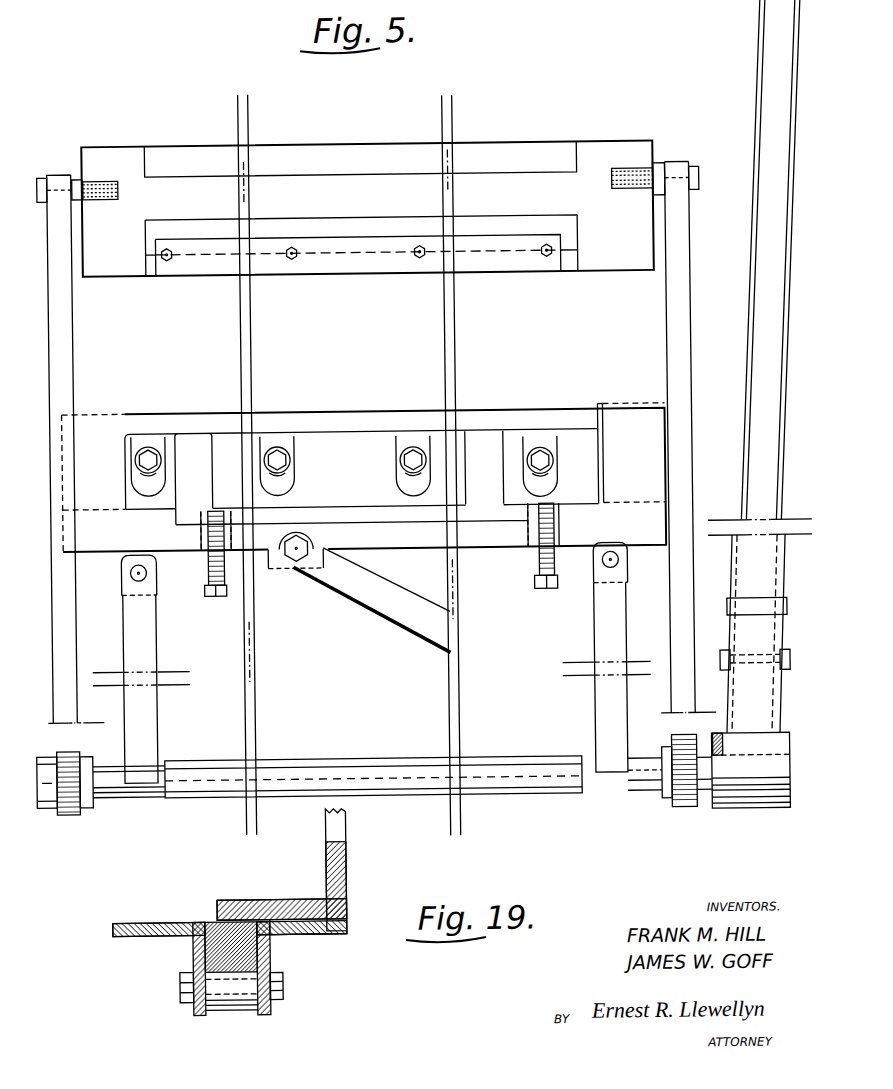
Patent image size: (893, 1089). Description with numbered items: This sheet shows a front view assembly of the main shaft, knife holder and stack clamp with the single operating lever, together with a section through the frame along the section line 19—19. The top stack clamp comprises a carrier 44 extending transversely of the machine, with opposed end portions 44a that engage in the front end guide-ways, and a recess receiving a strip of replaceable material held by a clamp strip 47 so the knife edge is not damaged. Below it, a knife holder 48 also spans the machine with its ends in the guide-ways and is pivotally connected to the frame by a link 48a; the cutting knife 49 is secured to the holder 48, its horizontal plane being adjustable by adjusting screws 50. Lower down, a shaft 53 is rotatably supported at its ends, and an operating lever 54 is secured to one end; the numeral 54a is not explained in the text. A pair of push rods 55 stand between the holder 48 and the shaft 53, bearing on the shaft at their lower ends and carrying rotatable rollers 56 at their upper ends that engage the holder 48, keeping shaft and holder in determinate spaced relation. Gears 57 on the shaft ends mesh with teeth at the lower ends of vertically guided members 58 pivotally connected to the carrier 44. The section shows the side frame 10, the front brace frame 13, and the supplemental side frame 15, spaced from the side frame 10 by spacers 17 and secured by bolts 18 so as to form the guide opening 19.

In FIG. 5, the carrier 44 is at (508, 153).
In FIG. 5, the opposed end portions 44a is at (94, 156).
In FIG. 5, the clamp strip 47 is at (506, 264).
In FIG. 5, the knife holder 48 is at (461, 433).
In FIG. 5, the link 48a is at (395, 617).
In FIG. 5, the cutting knife 49 is at (330, 407).
In FIG. 5, the adjusting screws 50 is at (226, 588).
In FIG. 5, the shaft 53 is at (516, 786).
In FIG. 5, the operating lever 54 is at (756, 5).
In FIG. 5, the sleeve 54a is at (778, 564).
In FIG. 5, the push rods 55 is at (155, 712).
In FIG. 19, the push rods 55 is at (211, 950).
In FIG. 5, the rotatable rollers 56 is at (156, 570).
In FIG. 5, the gears 57 is at (65, 813).
In FIG. 5, the vertically guided members 58 is at (62, 326).
In FIG. 5, the guide opening 19 is at (213, 634).
In FIG. 19, the front brace frame 13 is at (342, 890).
In FIG. 19, the supplemental side frame 15 is at (321, 931).
In FIG. 19, the spacers 17 is at (228, 1013).
In FIG. 19, the side frame 10 is at (195, 1013).
In FIG. 19, the bolts 18 is at (280, 985).